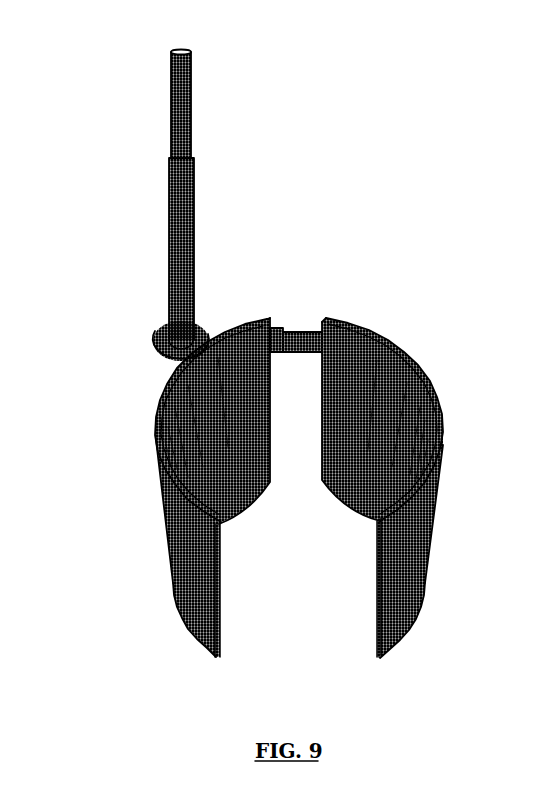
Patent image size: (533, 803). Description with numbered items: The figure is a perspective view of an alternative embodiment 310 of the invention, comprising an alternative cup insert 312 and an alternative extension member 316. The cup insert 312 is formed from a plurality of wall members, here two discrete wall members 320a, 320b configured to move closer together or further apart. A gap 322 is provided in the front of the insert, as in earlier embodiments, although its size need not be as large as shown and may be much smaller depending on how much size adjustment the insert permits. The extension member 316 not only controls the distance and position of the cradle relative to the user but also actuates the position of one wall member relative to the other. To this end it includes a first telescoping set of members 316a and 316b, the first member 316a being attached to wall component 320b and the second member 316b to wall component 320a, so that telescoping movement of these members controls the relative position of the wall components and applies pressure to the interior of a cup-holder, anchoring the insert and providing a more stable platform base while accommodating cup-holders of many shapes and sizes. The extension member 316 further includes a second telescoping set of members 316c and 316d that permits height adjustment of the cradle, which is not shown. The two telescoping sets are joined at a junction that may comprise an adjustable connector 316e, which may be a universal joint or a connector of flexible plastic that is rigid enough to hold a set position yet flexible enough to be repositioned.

The embodiment 310 is at (300, 120).
The cup insert 312 is at (422, 370).
The extension member 316 is at (167, 248).
The first member 316a is at (305, 330).
The second member 316b is at (215, 328).
The first member of second telescoping set 316c is at (170, 102).
The second member of second telescoping set 316d is at (193, 205).
The adjustable connector 316e is at (157, 343).
The wall member 320a is at (160, 463).
The wall member 320b is at (408, 538).
The gap 322 is at (257, 640).